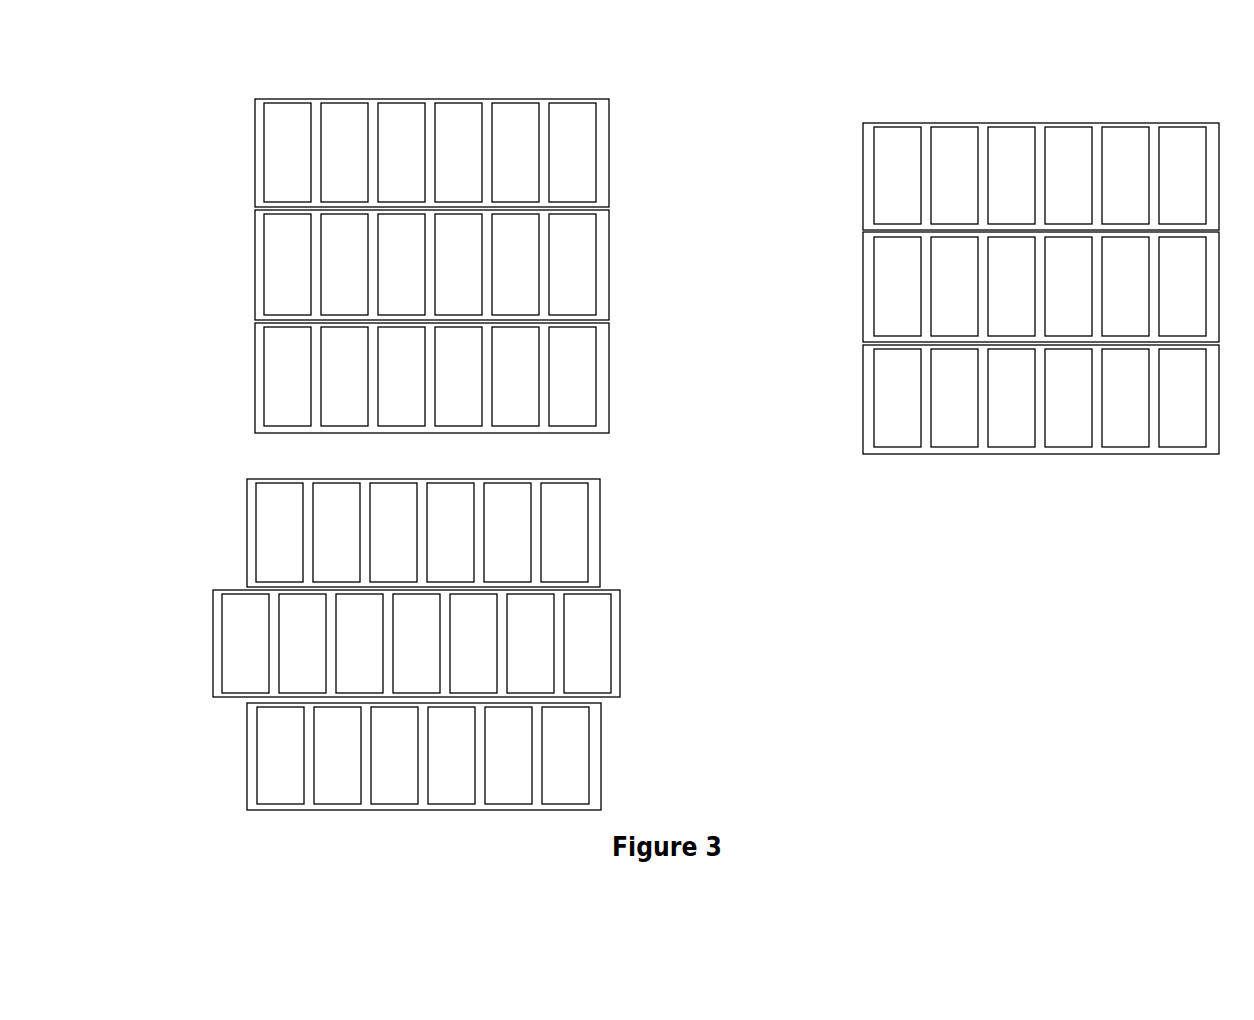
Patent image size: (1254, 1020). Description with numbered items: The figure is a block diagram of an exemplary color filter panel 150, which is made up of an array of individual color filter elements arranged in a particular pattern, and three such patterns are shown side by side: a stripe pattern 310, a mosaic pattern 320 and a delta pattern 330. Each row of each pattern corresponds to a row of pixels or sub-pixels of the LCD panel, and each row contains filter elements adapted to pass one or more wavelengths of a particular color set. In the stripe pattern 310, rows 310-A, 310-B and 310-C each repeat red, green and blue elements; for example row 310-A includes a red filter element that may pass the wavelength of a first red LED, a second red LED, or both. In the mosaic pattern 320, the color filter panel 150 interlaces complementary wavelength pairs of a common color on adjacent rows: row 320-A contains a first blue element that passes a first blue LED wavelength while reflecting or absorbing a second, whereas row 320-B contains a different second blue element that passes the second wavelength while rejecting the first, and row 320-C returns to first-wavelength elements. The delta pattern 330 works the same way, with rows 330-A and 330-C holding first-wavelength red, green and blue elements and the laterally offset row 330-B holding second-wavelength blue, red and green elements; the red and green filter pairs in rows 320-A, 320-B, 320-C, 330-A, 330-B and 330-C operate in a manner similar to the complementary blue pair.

The color filter panel 150 is at (278, 64).
The stripe pattern 310 is at (218, 110).
The row of stripe pattern 310-A is at (255, 170).
The row of stripe pattern 310-B is at (255, 279).
The row of stripe pattern 310-C is at (233, 378).
The mosaic pattern 320 is at (828, 134).
The row of mosaic pattern 320-A is at (863, 192).
The row of mosaic pattern 320-B is at (863, 302).
The row of mosaic pattern 320-C is at (863, 400).
The delta pattern 330 is at (233, 480).
The row of delta pattern 330-A is at (247, 550).
The row of delta pattern 330-B is at (211, 653).
The row of delta pattern 330-C is at (247, 757).